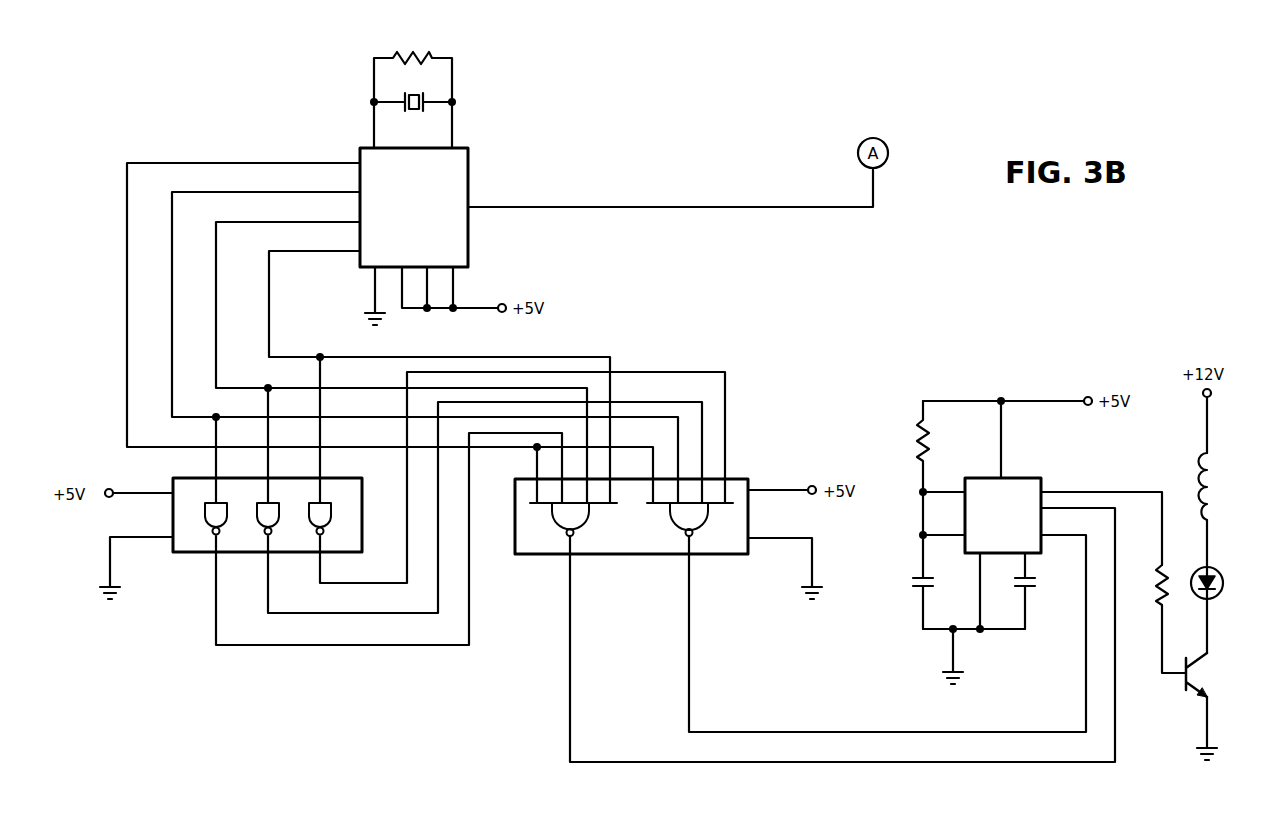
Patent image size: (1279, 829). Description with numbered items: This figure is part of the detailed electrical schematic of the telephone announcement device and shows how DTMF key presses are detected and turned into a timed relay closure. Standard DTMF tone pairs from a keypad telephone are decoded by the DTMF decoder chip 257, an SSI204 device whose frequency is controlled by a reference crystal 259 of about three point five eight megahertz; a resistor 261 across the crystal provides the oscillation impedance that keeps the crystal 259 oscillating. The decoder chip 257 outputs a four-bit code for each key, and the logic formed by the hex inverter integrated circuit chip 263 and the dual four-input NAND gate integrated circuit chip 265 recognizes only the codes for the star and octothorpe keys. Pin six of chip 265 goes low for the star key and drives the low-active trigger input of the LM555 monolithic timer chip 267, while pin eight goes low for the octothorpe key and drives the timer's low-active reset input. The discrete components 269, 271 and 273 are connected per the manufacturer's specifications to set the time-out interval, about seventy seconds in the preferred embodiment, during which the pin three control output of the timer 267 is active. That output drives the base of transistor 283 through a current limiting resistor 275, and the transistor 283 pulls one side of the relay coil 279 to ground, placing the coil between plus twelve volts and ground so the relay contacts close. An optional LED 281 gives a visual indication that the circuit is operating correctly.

The DTMF decoder chip 257 is at (470, 160).
The reference crystal 259 is at (404, 112).
The resistor 261 is at (425, 55).
The integrated circuit chip 263 is at (192, 555).
The integrated circuit chip 265 is at (531, 557).
The monolithic timer chip 267 is at (1022, 478).
The discrete component 269 is at (913, 588).
The discrete component 271 is at (1037, 588).
The discrete component 273 is at (918, 450).
The current limiting resistor 275 is at (1156, 594).
The relay coil 279 is at (1214, 478).
The LED 281 is at (1221, 595).
The transistor 283 is at (1186, 690).